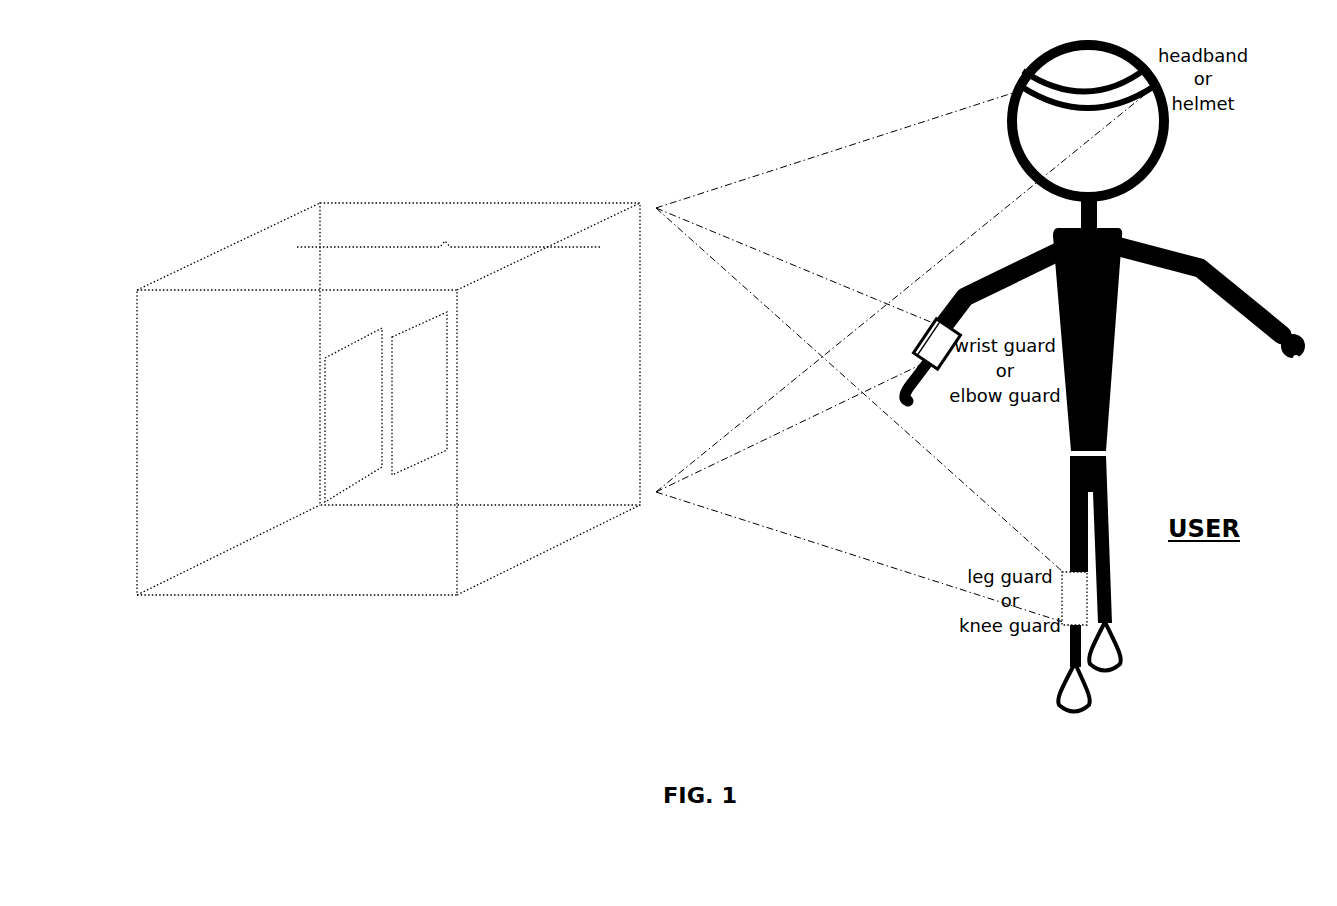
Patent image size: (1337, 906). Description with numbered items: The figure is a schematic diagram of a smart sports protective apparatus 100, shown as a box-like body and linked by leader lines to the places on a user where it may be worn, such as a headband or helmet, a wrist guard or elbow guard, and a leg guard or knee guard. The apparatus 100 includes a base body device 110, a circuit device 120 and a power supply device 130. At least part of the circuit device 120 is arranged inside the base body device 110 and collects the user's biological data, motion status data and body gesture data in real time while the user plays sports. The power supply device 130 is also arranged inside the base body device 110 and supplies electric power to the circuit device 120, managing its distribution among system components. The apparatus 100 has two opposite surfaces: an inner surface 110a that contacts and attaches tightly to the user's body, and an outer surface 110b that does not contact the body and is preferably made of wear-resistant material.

The smart sports protective apparatus 100 is at (388, 434).
The base body device 110 is at (388, 399).
The inner surface 110a is at (480, 354).
The outer surface 110b is at (297, 442).
The circuit device 120 is at (419, 393).
The power supply device 130 is at (353, 415).